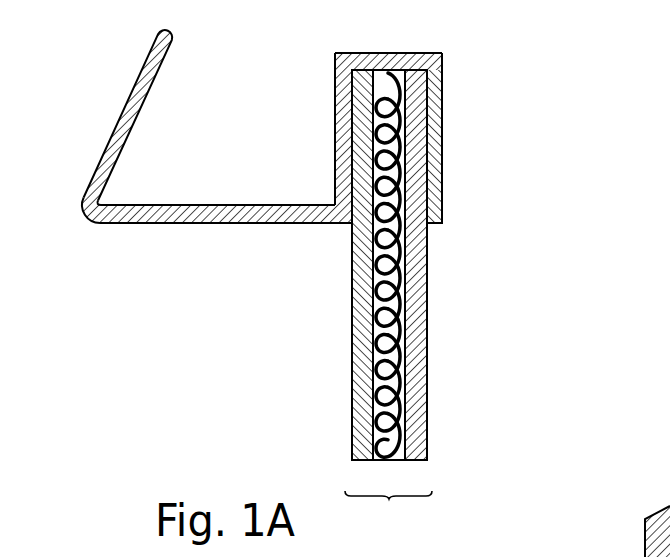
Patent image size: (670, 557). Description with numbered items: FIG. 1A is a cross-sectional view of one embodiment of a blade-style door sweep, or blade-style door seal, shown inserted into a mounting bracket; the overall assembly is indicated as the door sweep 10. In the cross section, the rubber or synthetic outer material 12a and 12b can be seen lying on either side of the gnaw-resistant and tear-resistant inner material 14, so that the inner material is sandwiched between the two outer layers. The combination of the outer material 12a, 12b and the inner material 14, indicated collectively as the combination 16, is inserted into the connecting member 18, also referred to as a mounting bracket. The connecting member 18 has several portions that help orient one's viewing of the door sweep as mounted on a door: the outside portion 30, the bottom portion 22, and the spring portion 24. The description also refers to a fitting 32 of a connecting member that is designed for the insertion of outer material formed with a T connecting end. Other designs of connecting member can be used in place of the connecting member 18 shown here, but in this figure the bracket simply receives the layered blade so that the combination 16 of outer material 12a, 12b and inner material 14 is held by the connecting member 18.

The retention clip assembly 10 is at (540, 235).
The outer material 12a is at (352, 310).
The outer material 12b is at (427, 312).
The inner material 14 is at (392, 460).
The combination of outer material and inner material 16 is at (388, 513).
The connecting member 18 is at (92, 95).
The bottom portion 22 is at (238, 223).
The spring portion 24 is at (84, 212).
The outside portion 30 is at (443, 168).
The fitting 32 is at (383, 53).